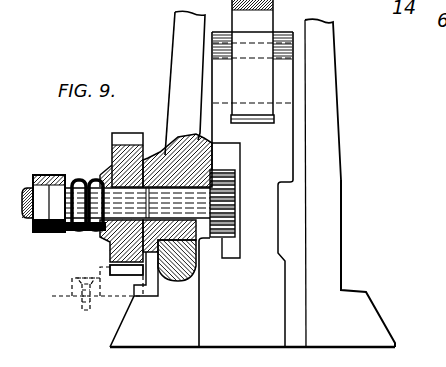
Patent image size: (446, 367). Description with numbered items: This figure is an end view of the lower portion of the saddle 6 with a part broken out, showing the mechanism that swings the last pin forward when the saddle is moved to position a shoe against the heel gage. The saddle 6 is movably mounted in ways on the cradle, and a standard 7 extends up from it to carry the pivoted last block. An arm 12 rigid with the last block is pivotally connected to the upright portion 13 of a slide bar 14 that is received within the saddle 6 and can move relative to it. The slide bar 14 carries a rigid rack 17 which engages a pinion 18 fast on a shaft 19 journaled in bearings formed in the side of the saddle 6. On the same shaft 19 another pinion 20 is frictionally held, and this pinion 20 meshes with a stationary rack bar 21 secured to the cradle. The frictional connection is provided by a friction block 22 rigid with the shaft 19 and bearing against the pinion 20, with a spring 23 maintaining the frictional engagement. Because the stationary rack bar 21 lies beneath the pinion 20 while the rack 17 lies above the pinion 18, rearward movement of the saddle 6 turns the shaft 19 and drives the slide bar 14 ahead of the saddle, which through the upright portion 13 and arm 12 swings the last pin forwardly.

The saddle 6 is at (336, 233).
The standard 7 is at (177, 20).
The arm 12 is at (262, 25).
The upright portion 13 is at (281, 130).
The slide bar 14 is at (263, 301).
The rack 17 is at (222, 152).
The pinion 18 is at (237, 198).
The shaft 19 is at (184, 262).
The pinion 20 is at (110, 241).
The stationary rack bar 21 is at (118, 283).
The friction block 22 is at (116, 185).
The spring 23 is at (84, 184).